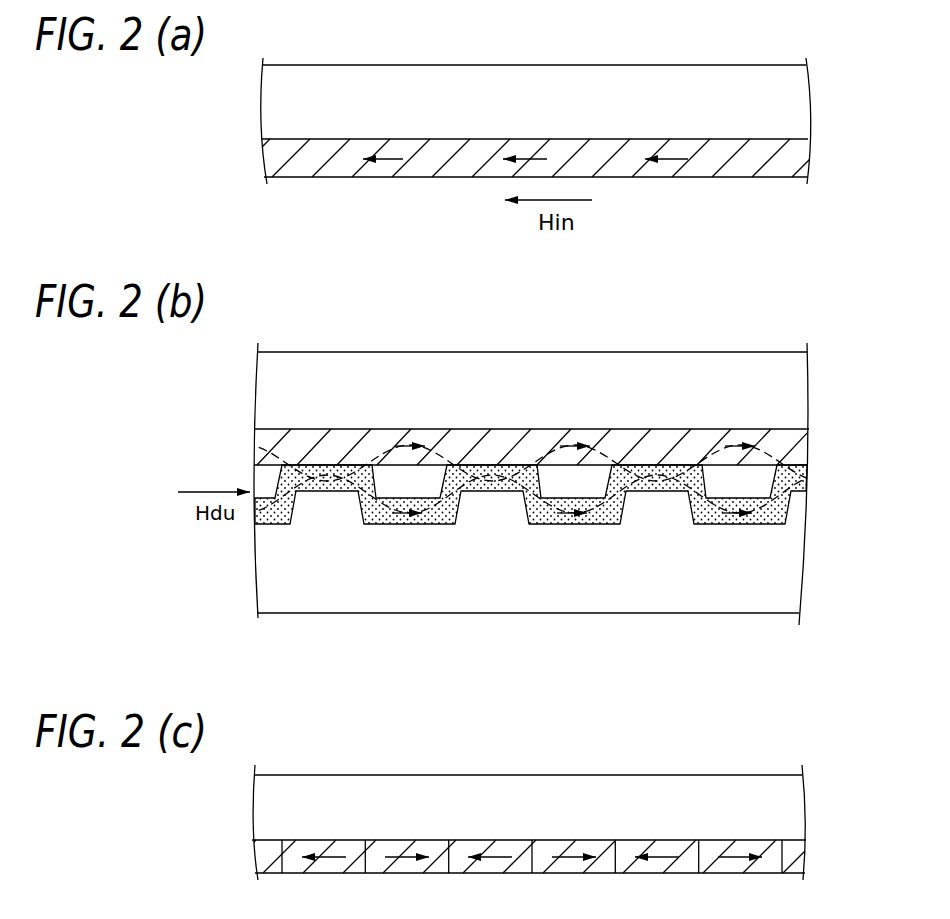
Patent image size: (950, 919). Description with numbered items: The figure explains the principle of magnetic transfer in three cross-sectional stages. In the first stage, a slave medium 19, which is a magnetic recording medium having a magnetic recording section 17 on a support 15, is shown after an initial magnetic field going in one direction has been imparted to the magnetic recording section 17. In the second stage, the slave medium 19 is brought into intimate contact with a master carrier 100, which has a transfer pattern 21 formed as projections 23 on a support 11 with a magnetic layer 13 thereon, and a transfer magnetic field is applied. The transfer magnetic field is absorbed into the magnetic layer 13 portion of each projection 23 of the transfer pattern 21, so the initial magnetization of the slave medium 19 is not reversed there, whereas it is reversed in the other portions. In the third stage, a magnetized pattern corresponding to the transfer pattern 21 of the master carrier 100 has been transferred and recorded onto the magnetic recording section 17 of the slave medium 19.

In FIG. 2B, the support 11 is at (562, 579).
In FIG. 2B, the magnetic layer 13 is at (793, 497).
In FIG. 2A, the support 15 is at (793, 114).
In FIG. 2B, the support 15 is at (793, 400).
In FIG. 2C, the support 15 is at (787, 809).
In FIG. 2A, the magnetic recording section 17 is at (549, 158).
In FIG. 2B, the magnetic recording section 17 is at (560, 447).
In FIG. 2C, the magnetic recording section 17 is at (543, 856).
In FIG. 2A, the slave medium 19 is at (573, 121).
In FIG. 2B, the slave medium 19 is at (584, 408).
In FIG. 2C, the slave medium 19 is at (568, 824).
In FIG. 2B, the transfer pattern 21 is at (495, 458).
In FIG. 2B, the projection 23 is at (372, 478).
In FIG. 2B, the master carrier 100 is at (591, 539).